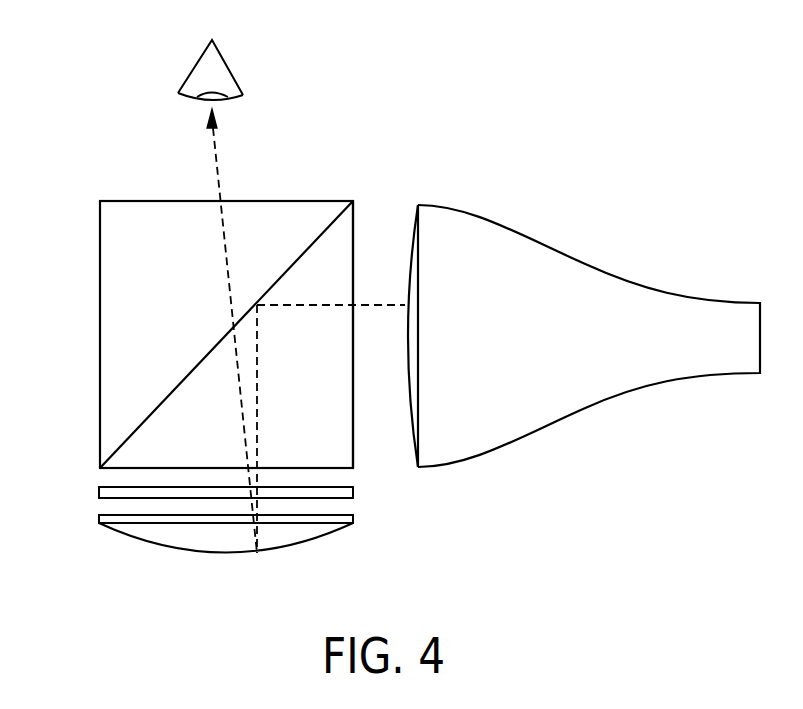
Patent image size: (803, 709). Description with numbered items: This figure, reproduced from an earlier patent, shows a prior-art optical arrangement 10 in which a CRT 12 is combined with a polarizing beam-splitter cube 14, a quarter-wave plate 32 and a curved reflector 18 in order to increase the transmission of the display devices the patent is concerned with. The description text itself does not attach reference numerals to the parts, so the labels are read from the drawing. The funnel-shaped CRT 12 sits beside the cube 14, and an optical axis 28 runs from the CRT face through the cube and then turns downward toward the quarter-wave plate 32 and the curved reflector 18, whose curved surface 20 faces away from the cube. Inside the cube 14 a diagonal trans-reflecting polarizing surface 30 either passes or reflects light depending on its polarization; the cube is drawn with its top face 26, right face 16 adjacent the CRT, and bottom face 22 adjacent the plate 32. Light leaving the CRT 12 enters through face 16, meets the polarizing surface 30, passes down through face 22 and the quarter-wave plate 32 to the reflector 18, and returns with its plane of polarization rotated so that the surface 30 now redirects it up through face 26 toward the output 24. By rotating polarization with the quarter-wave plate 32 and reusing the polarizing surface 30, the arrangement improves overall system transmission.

The optical system 10 is at (420, 133).
The lens 12 is at (477, 232).
The beam splitter cube 14 is at (112, 327).
The right face of beam splitter 16 is at (353, 407).
The lens 18 is at (167, 535).
The convex surface of lens 20 is at (293, 547).
The bottom face of beam splitter 22 is at (187, 467).
The detector 24 is at (220, 75).
The top face of beam splitter 26 is at (305, 201).
The optical axis 28 is at (288, 306).
The beam splitting surface 30 is at (205, 355).
The plate 32 is at (99, 492).